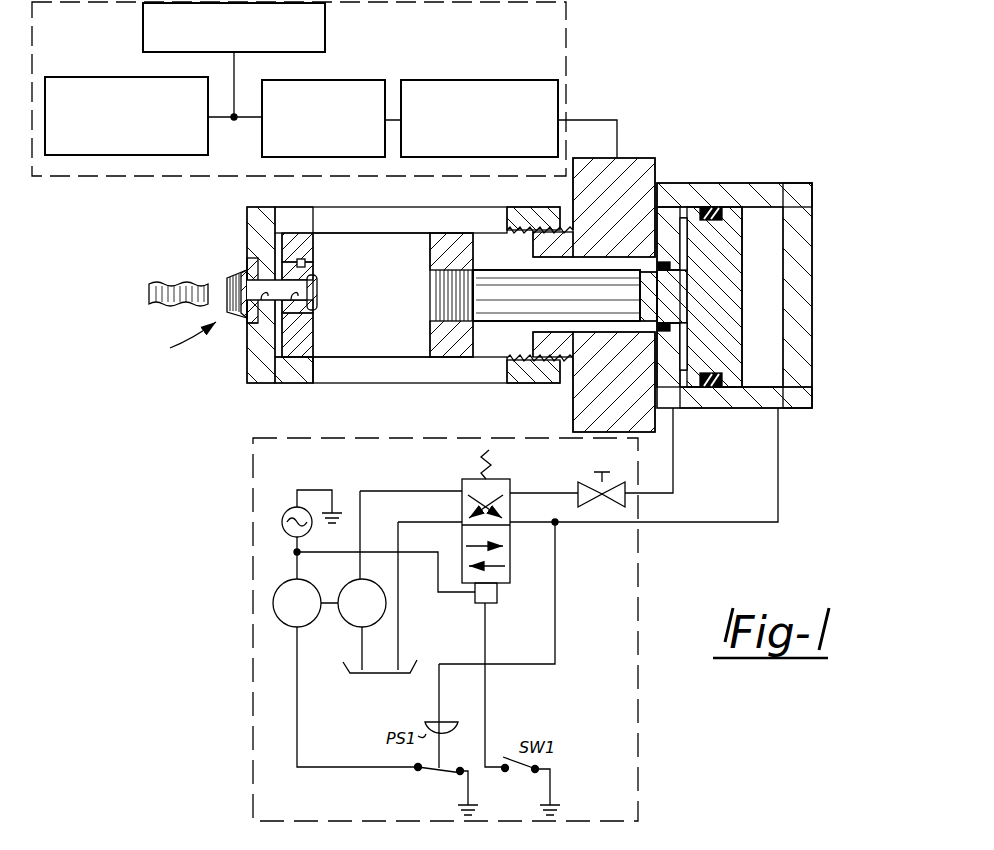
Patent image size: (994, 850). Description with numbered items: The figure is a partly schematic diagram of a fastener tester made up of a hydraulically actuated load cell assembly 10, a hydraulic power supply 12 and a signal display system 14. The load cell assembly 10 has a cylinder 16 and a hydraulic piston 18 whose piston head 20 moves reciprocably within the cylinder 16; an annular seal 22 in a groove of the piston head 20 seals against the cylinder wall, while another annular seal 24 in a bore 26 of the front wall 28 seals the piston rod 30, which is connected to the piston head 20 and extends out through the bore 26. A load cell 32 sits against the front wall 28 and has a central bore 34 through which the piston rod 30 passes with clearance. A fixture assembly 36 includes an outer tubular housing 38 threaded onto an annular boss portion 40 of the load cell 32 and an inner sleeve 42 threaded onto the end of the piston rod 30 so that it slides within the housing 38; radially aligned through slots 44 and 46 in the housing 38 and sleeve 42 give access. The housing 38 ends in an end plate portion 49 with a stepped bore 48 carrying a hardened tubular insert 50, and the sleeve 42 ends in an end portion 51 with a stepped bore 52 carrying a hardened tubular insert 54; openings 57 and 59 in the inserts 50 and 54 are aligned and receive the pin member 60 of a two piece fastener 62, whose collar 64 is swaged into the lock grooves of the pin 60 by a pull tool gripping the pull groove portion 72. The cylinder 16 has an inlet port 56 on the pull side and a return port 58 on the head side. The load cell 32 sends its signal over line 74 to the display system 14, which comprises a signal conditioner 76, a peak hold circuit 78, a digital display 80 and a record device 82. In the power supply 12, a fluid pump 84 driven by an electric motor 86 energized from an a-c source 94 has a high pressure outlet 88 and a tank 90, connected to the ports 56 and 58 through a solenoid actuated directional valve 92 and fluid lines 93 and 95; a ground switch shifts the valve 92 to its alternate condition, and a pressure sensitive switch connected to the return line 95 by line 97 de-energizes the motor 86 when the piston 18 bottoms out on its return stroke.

The hydraulically actuated load cell assembly 10 is at (292, 243).
The hydraulic power supply 12 is at (653, 615).
The signal display system 14 is at (578, 47).
The cylinder 16 is at (794, 184).
The hydraulic piston 18 is at (746, 291).
The piston head 20 is at (741, 229).
The annular seal 22 is at (712, 207).
The annular seal 24 is at (662, 344).
The bore 26 is at (665, 313).
The front wall 28 is at (662, 246).
The piston rod 30 is at (592, 278).
The load cell 32 is at (641, 160).
The central bore 34 is at (602, 348).
The fixture assembly 36 is at (248, 393).
The outer tubular housing 38 is at (552, 187).
The annular boss portion 40 is at (533, 253).
The inner sleeve 42 is at (447, 231).
The through slot 44 is at (384, 222).
The through slot 46 is at (410, 250).
The stepped bore 48 is at (258, 262).
The end plate portion 49 is at (254, 222).
The hardened tubular insert 50 is at (250, 324).
The end portion 51 is at (291, 237).
The stepped bore 52 is at (308, 267).
The hardened tubular insert 54 is at (309, 318).
The inlet port 56 is at (677, 409).
The opening 57 is at (261, 300).
The return port 58 is at (781, 409).
The opening 59 is at (291, 300).
The pin member 60 is at (316, 290).
The two piece fastener 62 is at (173, 344).
The collar 64 is at (233, 272).
The pull groove portion 72 is at (168, 299).
The line 74 is at (603, 118).
The signal conditioner 76 is at (494, 79).
The peak hold circuit 78 is at (371, 80).
The digital display 80 is at (114, 38).
The record device 82 is at (326, 33).
The fluid pump 84 is at (340, 627).
The electric motor 86 is at (294, 553).
The high pressure outlet 88 is at (358, 566).
The tank 90 is at (387, 675).
The hydraulic directional valve 92 is at (462, 479).
The fluid line 93 is at (576, 490).
The a-c source 94 is at (283, 518).
The fluid line 95 is at (535, 525).
The line 97 is at (557, 652).